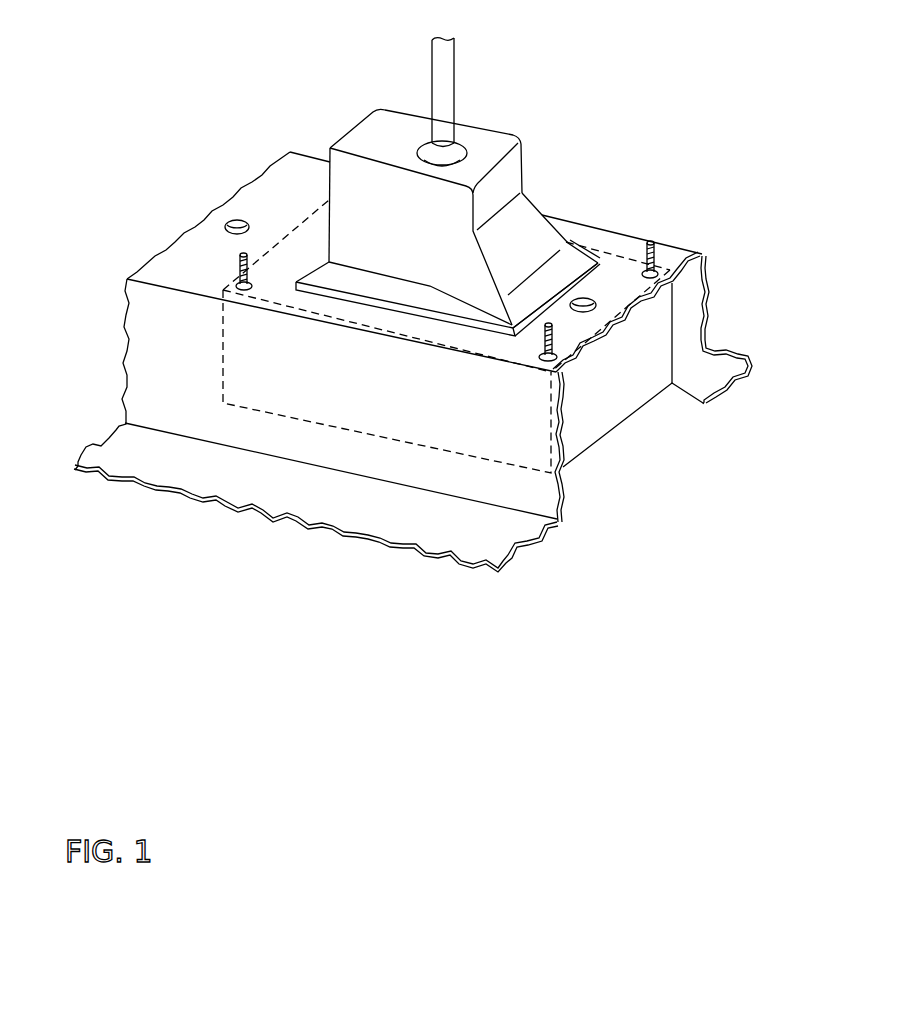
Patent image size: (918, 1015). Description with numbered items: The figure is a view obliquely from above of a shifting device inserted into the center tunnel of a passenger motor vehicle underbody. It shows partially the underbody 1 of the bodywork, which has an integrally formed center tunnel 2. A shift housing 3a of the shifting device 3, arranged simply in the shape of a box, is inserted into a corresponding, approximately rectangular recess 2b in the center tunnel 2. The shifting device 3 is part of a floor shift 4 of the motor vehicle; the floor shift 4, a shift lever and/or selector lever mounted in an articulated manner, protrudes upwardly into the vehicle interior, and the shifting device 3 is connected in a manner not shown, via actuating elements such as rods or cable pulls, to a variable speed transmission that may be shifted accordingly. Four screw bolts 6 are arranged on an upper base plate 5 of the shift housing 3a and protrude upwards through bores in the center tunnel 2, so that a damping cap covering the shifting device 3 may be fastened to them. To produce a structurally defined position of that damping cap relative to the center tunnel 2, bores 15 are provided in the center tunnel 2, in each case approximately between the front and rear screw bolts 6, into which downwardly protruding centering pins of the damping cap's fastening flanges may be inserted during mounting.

The underbody 1 is at (419, 305).
The center tunnel 2 is at (705, 325).
The recess 2b is at (308, 289).
The shifting device 3 is at (499, 118).
The shift housing 3a is at (636, 433).
The floor shift 4 is at (448, 88).
The upper base plate 5 is at (350, 291).
The screw bolts 6 is at (244, 267).
The bores 15 is at (234, 222).